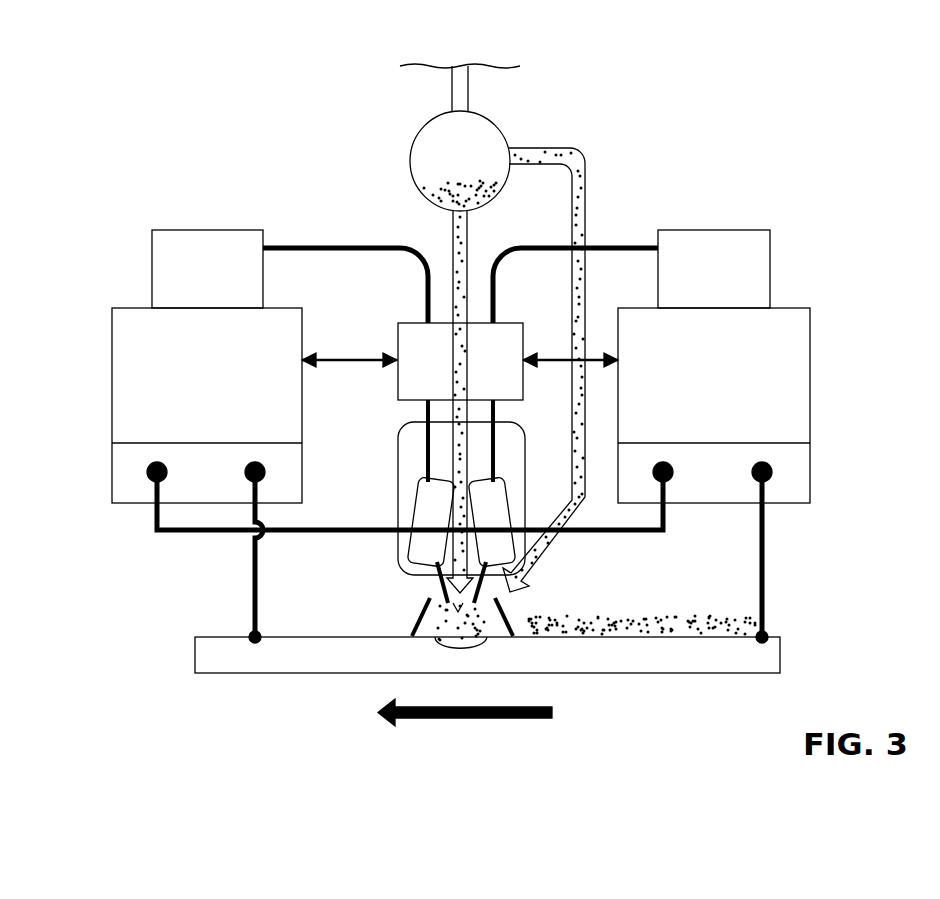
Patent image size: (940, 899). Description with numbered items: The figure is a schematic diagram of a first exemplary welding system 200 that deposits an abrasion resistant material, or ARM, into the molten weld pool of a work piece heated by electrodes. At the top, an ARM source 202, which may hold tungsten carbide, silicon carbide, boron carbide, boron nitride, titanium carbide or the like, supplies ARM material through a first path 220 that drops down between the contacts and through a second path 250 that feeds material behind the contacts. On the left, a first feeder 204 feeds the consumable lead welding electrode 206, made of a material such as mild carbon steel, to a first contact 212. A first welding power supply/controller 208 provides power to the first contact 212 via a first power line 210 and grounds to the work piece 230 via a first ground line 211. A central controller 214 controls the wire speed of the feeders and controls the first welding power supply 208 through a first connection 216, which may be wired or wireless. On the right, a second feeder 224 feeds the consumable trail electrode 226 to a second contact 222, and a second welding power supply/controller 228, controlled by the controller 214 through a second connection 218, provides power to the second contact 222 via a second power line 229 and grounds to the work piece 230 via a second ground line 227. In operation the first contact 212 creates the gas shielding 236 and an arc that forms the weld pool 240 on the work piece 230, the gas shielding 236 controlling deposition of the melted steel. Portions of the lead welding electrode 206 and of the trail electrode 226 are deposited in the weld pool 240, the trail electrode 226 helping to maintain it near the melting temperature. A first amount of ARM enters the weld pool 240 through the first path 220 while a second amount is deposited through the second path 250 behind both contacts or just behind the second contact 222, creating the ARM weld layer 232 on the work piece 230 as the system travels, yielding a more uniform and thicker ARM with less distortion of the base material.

The welding system 200 is at (760, 80).
The ARM source 202 is at (496, 123).
The first feeder 204 is at (168, 230).
The lead welding electrode 206 is at (345, 275).
The first welding power supply/controller 208 is at (127, 308).
The first power line 210 is at (205, 533).
The first ground line 211 is at (258, 563).
The first contact 212 is at (412, 553).
The controller 214 is at (397, 383).
The first connection 216 is at (345, 355).
The second connection 218 is at (592, 361).
The first path 220 is at (455, 220).
The second contact 222 is at (513, 497).
The second feeder 224 is at (748, 230).
The trail electrode 226 is at (530, 250).
The second ground line 227 is at (767, 540).
The second welding power supply/controller 228 is at (792, 308).
The second power line 229 is at (645, 533).
The work piece 230 is at (773, 647).
The ARM weld layer 232 is at (713, 613).
The gas shielding 236 is at (418, 608).
The weld pool 240 is at (468, 640).
The second path 250 is at (560, 543).